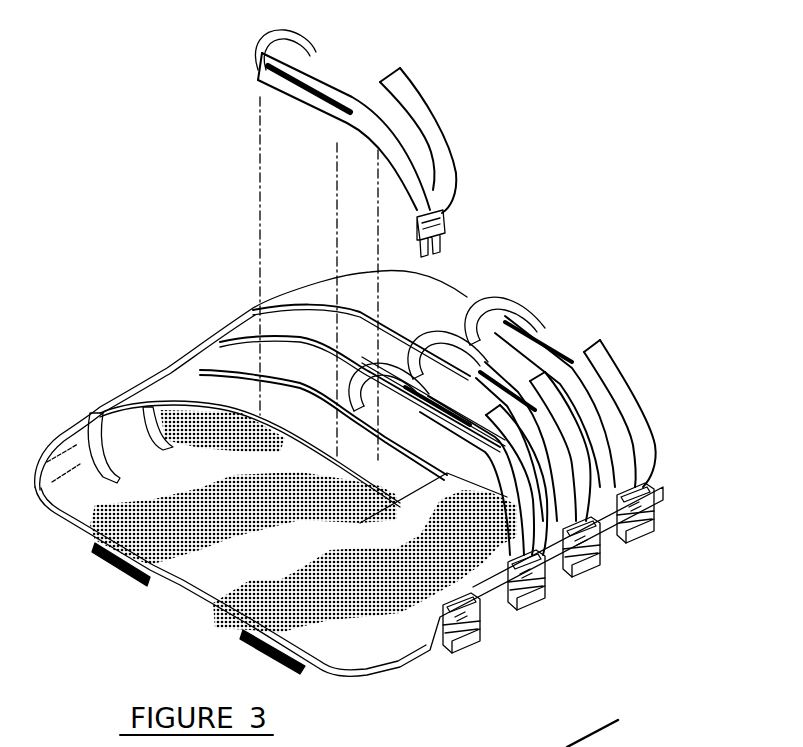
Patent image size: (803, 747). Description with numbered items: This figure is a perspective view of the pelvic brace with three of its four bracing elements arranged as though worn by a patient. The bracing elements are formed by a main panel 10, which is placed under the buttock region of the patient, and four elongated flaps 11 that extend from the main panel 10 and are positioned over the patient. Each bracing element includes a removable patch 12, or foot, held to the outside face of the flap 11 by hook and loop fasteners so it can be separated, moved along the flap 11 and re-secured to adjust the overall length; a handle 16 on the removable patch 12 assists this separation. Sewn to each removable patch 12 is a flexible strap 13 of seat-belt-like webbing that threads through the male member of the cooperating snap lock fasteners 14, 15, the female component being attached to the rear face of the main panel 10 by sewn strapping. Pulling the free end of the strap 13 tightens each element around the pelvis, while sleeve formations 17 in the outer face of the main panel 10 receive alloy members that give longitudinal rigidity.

The main panel 10 is at (220, 570).
The elongated flap 11 is at (222, 337).
The removable patch 12 is at (338, 77).
The flexible strap 13 is at (433, 133).
The male snap lock fastener 14 is at (540, 577).
The female snap lock fastener 15 is at (535, 431).
The handle 16 is at (258, 46).
The sleeve formation 17 is at (128, 565).